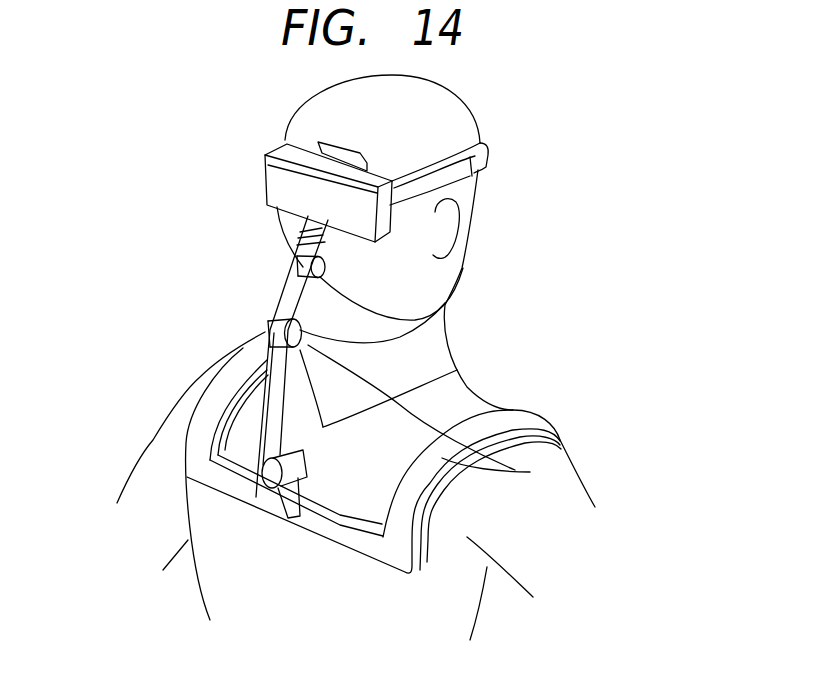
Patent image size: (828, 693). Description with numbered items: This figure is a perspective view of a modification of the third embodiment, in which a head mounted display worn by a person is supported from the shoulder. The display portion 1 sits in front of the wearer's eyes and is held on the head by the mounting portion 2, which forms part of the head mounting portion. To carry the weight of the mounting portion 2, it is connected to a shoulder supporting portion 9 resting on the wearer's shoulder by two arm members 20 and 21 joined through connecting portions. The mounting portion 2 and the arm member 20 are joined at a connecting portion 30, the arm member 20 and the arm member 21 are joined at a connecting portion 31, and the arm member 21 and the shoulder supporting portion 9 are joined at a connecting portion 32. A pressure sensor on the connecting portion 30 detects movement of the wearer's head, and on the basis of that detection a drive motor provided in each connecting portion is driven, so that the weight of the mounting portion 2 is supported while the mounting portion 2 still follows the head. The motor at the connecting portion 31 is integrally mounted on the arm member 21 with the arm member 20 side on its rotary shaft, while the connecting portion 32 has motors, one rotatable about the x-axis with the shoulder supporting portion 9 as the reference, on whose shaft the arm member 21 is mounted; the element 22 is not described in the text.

The display portion 1 is at (277, 170).
The mounting portion 2 is at (453, 180).
The shoulder supporting portion 9 is at (410, 503).
The arm member 20 is at (287, 297).
The arm member 21 is at (275, 402).
The upper roller 22 is at (325, 260).
The connecting portion 30 is at (425, 322).
The connecting portion 31 is at (530, 472).
The connecting portion 32 is at (263, 490).